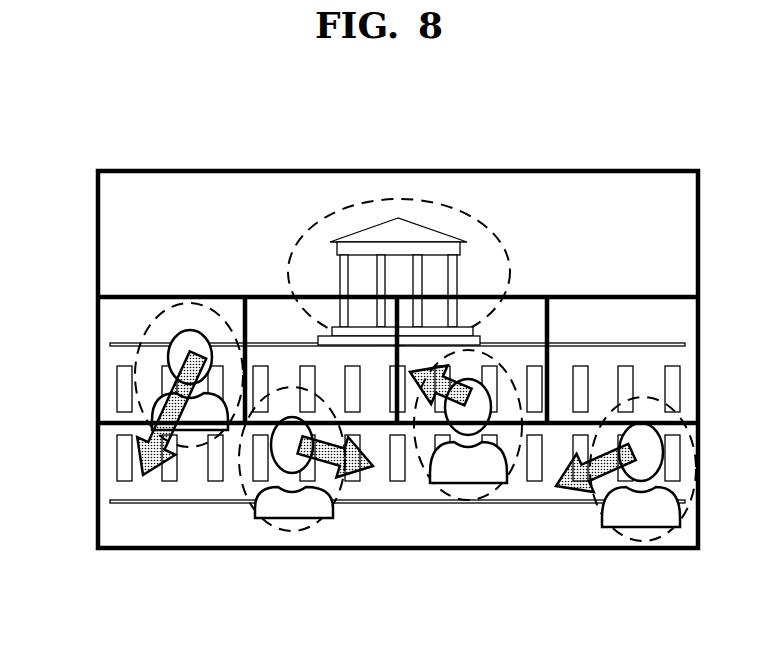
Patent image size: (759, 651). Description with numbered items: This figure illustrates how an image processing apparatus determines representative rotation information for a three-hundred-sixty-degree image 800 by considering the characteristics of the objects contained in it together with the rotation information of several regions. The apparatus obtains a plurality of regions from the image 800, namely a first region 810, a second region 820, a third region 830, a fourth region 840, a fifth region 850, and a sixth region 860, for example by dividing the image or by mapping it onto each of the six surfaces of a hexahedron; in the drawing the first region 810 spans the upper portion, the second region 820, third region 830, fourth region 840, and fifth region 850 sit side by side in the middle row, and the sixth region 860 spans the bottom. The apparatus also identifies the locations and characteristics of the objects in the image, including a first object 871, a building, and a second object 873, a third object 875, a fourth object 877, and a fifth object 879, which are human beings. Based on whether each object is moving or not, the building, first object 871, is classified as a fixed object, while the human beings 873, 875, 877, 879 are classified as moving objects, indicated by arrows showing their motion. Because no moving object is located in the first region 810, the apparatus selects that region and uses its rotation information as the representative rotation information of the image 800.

The 360-degree image 800 is at (628, 168).
The first region 810 is at (203, 180).
The second region 820 is at (143, 313).
The third region 830 is at (322, 310).
The fourth region 840 is at (470, 308).
The fifth region 850 is at (600, 308).
The sixth region 860 is at (205, 537).
The first object 871 is at (397, 200).
The second object 873 is at (220, 313).
The third object 875 is at (292, 532).
The fourth object 877 is at (467, 497).
The fifth object 879 is at (640, 542).